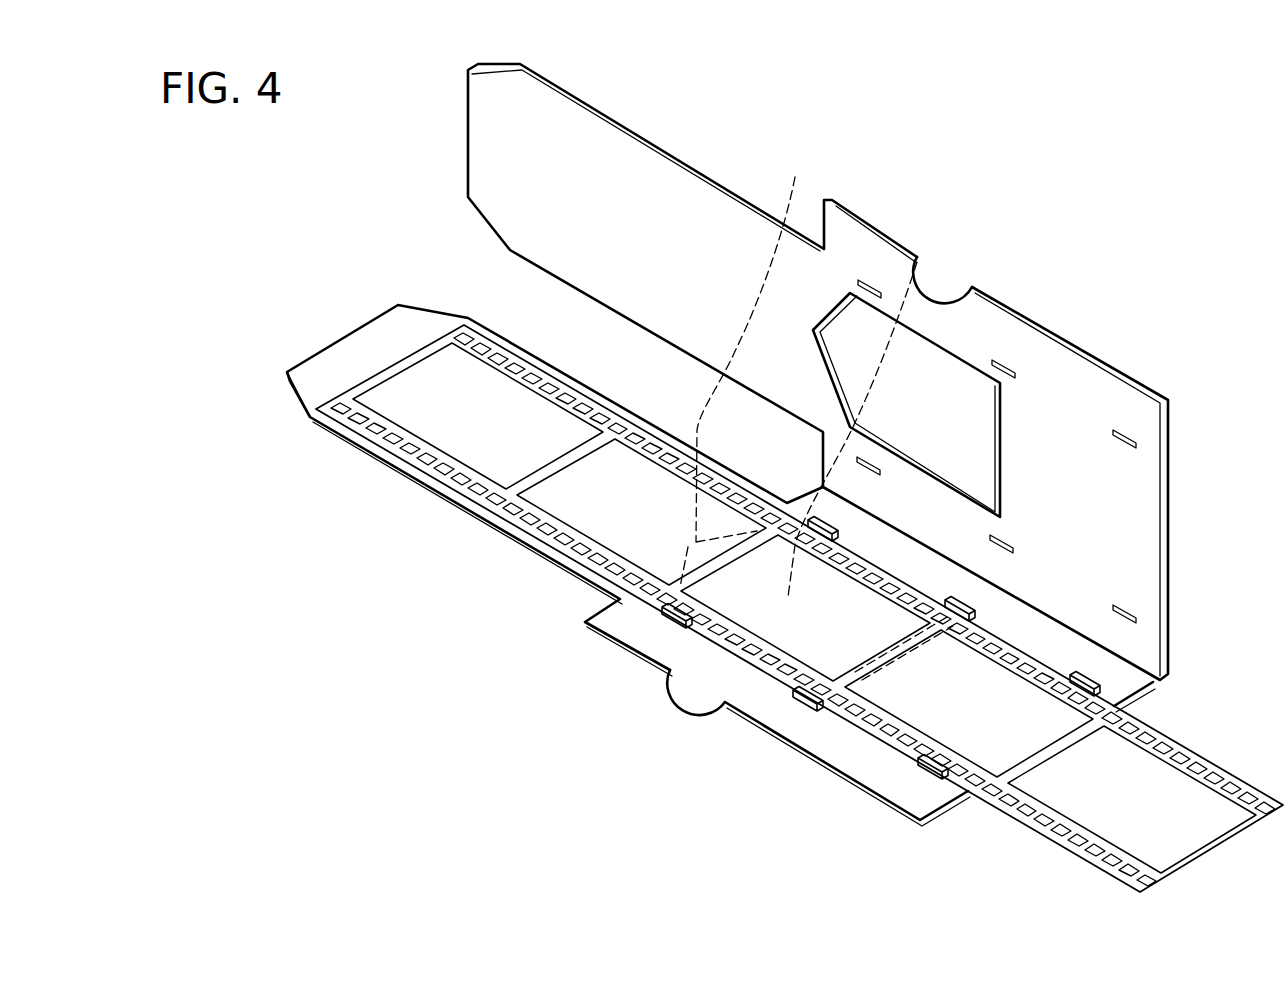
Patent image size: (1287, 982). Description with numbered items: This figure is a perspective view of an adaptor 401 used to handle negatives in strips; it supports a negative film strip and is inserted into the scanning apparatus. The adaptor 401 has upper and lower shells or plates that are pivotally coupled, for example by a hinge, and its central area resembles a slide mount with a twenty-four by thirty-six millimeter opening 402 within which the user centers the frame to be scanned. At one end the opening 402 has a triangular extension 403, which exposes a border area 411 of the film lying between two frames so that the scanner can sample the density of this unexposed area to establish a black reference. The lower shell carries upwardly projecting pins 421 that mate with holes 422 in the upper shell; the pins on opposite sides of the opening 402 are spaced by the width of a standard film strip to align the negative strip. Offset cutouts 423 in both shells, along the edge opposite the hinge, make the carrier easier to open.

The adaptor 401 is at (423, 318).
The opening 402 is at (923, 395).
The triangular extension 403 is at (827, 313).
The border area 411 is at (640, 567).
The pins 421 is at (925, 764).
The holes 422 is at (1015, 362).
The offset cutouts 423 is at (950, 282).